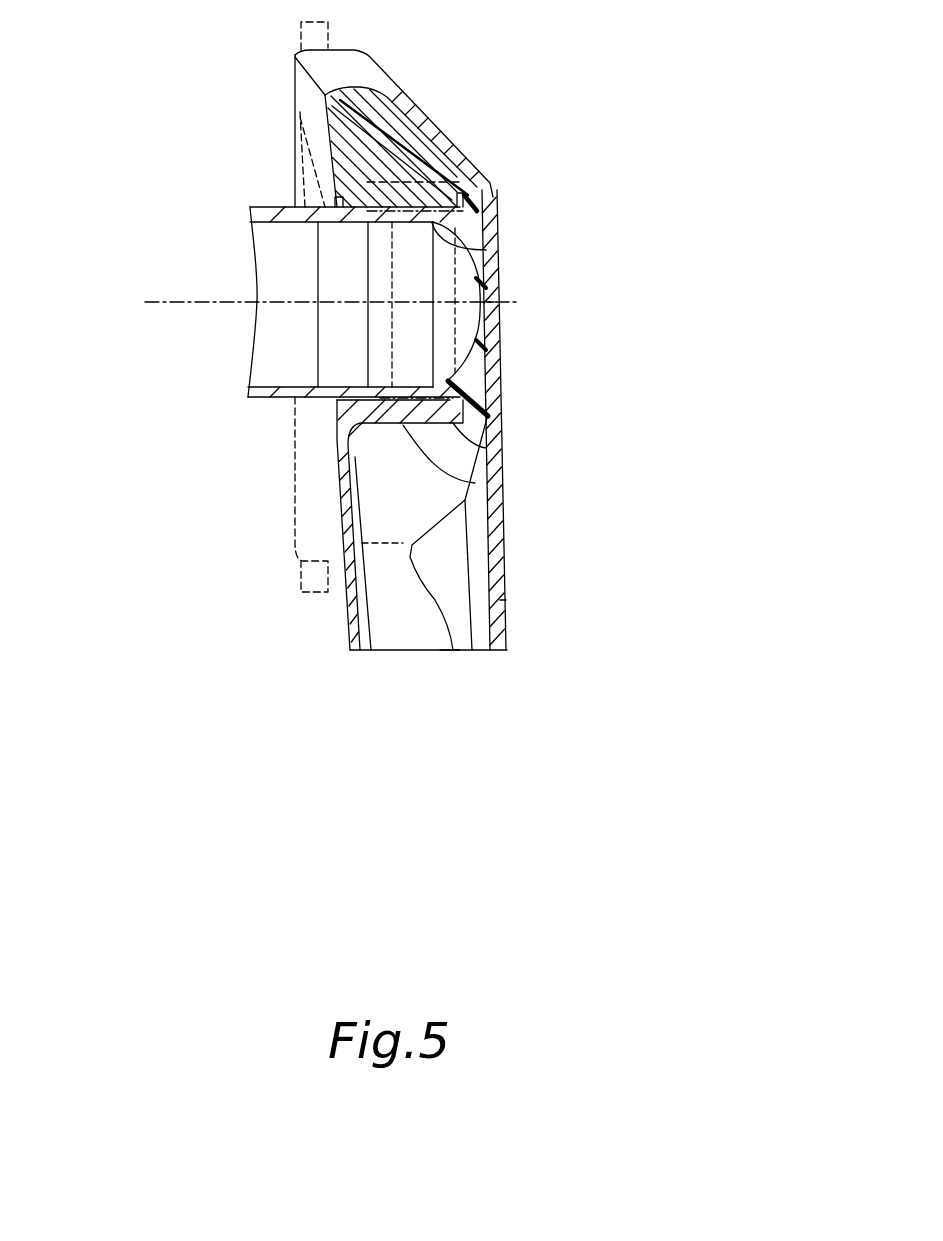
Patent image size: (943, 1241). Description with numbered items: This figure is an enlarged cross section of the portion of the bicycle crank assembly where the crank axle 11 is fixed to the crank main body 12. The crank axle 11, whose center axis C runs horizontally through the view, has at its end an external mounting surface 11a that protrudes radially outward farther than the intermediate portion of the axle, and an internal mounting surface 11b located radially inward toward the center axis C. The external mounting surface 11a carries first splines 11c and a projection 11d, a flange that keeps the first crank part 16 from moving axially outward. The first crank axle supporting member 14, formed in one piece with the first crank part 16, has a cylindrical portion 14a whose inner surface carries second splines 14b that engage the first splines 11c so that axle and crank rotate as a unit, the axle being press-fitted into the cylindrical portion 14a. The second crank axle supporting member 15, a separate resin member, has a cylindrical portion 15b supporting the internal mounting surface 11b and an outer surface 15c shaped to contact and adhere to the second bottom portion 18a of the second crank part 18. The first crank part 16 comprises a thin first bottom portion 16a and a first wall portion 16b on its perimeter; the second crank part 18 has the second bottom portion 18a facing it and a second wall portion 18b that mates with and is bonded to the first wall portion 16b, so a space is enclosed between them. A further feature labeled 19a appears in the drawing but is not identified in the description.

The center axis C is at (220, 303).
The crank axle 11 is at (268, 197).
The external mounting surface 11a is at (388, 195).
The internal mounting surface 11b is at (487, 250).
The first splines 11c is at (467, 177).
The projection 11d is at (472, 185).
The crank main body 12 is at (540, 618).
The first crank axle supporting member 14 is at (400, 432).
The cylindrical portion 14a is at (475, 482).
The second splines 14b is at (293, 110).
The second crank axle supporting member 15 is at (490, 213).
The cylindrical portion 15b is at (490, 447).
The outer surface 15c is at (500, 284).
The first crank part 16 is at (320, 618).
The first bottom portion 16a is at (357, 640).
The first wall portion 16b is at (400, 620).
The second crank part 18 is at (520, 522).
The second bottom portion 18a is at (485, 307).
The second wall portion 18b is at (467, 630).
The fastening portion 19a is at (490, 393).